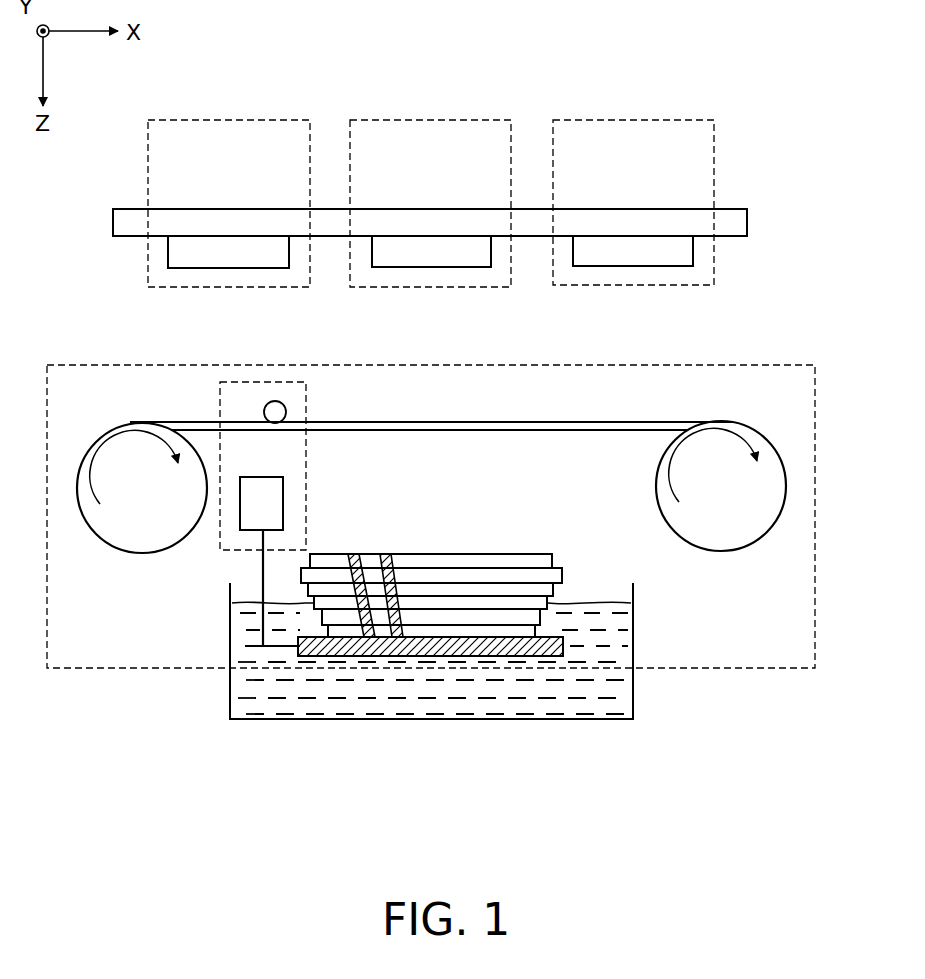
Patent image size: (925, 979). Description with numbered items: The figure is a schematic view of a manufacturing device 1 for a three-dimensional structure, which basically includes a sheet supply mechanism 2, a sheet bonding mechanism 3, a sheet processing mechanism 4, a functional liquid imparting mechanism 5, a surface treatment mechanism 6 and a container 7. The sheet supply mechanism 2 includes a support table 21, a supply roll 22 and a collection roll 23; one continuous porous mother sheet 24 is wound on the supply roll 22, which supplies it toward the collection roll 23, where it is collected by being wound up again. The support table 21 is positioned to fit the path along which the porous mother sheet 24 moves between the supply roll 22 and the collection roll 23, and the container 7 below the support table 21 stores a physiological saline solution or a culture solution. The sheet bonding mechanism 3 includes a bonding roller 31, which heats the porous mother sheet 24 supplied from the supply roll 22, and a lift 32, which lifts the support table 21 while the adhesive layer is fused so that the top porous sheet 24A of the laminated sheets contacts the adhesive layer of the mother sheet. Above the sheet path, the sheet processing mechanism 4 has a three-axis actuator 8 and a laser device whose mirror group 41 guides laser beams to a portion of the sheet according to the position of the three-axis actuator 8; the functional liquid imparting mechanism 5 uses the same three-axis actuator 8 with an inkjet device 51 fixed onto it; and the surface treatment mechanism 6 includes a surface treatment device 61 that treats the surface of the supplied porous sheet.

The manufacturing device 1 is at (754, 80).
The sheet supply mechanism 2 is at (815, 510).
The sheet bonding mechanism 3 is at (306, 454).
The sheet processing mechanism 4 is at (627, 120).
The functional liquid imparting mechanism 5 is at (426, 120).
The surface treatment mechanism 6 is at (226, 120).
The container 7 is at (432, 721).
The three-axis actuator 8 is at (741, 218).
The support table 21 is at (553, 645).
The supply roll 22 is at (140, 540).
The collection roll 23 is at (720, 538).
The porous mother sheet 24 is at (497, 420).
The porous sheet 24A is at (434, 563).
The bonding roller 31 is at (283, 411).
The lift 32 is at (273, 502).
The mirror group 41 is at (633, 250).
The inkjet device 51 is at (432, 250).
The surface treatment device 61 is at (228, 252).